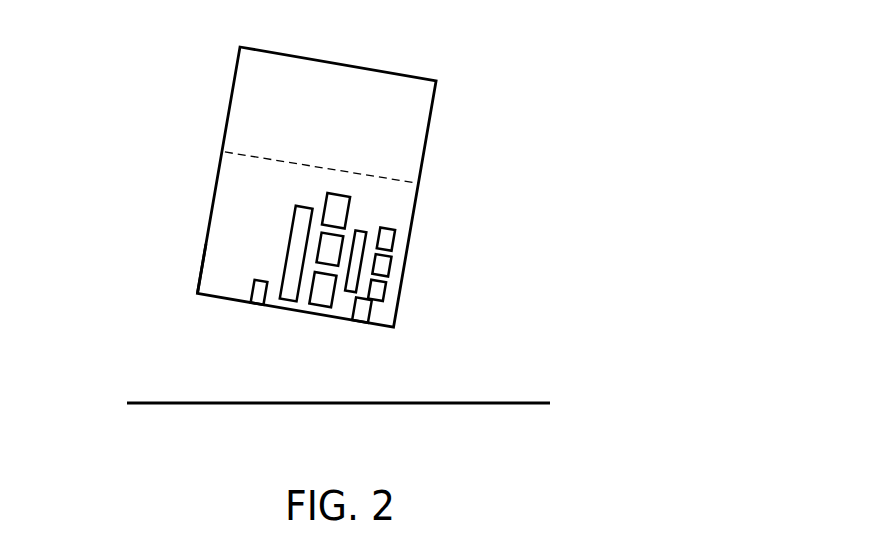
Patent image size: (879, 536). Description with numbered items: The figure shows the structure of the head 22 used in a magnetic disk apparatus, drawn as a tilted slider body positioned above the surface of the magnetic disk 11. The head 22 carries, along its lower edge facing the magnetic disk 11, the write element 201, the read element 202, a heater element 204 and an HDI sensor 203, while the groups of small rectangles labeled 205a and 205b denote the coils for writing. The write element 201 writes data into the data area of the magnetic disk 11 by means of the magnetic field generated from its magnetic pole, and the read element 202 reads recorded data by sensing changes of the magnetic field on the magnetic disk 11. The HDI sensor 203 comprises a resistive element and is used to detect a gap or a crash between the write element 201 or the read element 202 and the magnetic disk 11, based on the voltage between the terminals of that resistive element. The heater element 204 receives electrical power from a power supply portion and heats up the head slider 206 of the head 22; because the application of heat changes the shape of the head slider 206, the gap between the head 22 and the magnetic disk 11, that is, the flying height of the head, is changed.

The head 22 is at (363, 64).
The magnetic disk 11 is at (268, 402).
The write element 201 is at (362, 310).
The read element 202 is at (258, 307).
The HDI sensor 203 is at (358, 228).
The heater element 204 is at (298, 222).
The coil for writing 205a is at (336, 193).
The coil for writing 205b is at (389, 239).
The head slider 206 is at (222, 271).